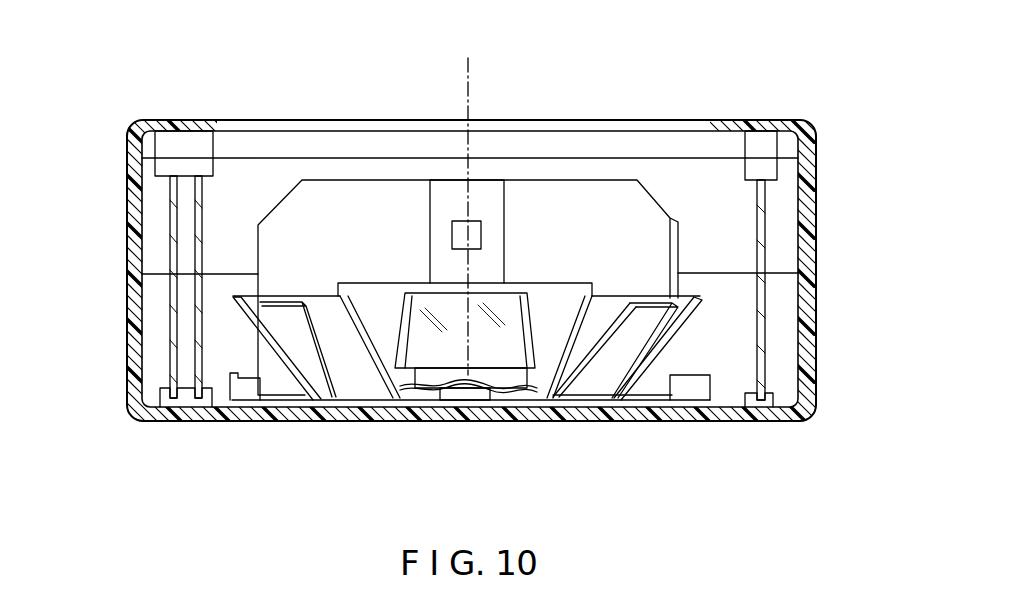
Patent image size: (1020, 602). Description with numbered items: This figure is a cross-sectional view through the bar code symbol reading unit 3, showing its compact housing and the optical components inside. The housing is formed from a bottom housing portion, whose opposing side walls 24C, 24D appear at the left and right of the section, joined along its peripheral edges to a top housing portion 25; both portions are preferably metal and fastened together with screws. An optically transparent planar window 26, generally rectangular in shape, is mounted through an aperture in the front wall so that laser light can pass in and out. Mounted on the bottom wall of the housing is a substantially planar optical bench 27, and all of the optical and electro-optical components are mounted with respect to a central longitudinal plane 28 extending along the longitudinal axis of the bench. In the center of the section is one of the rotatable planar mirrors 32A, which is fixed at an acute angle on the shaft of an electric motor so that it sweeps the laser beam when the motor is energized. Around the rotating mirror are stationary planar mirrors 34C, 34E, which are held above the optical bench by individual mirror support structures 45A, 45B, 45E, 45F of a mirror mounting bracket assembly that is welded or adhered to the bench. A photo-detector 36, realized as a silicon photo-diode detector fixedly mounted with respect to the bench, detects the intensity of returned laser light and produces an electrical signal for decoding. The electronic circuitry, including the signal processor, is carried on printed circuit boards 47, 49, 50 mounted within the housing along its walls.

The bar code symbol reading unit 3 is at (716, 86).
The side wall 24C is at (128, 281).
The side wall 24D is at (813, 271).
The top housing portion 25 is at (128, 147).
The optically transparent planar window 26 is at (272, 118).
The optical bench 27 is at (545, 406).
The central longitudinal plane 28 is at (471, 65).
The rotatable planar mirror 32A is at (518, 360).
The stationary planar mirror 34C is at (340, 295).
The stationary planar mirror 34E is at (691, 299).
The photo-detector 36 is at (482, 224).
The mirror support structure 45A is at (233, 298).
The mirror support structure 45B is at (348, 389).
The mirror support structure 45E is at (648, 305).
The mirror support structure 45F is at (733, 330).
The printed circuit board 47 is at (766, 303).
The printed circuit board 49 is at (200, 378).
The printed circuit board 50 is at (170, 327).